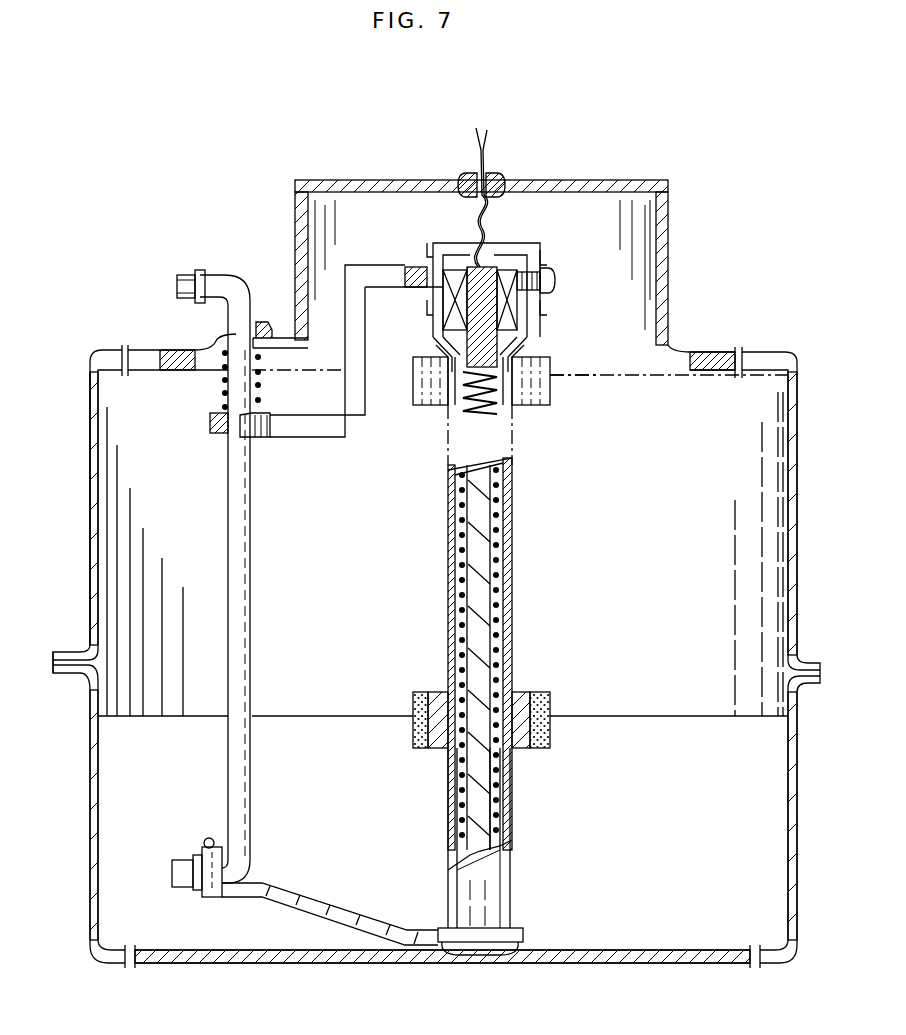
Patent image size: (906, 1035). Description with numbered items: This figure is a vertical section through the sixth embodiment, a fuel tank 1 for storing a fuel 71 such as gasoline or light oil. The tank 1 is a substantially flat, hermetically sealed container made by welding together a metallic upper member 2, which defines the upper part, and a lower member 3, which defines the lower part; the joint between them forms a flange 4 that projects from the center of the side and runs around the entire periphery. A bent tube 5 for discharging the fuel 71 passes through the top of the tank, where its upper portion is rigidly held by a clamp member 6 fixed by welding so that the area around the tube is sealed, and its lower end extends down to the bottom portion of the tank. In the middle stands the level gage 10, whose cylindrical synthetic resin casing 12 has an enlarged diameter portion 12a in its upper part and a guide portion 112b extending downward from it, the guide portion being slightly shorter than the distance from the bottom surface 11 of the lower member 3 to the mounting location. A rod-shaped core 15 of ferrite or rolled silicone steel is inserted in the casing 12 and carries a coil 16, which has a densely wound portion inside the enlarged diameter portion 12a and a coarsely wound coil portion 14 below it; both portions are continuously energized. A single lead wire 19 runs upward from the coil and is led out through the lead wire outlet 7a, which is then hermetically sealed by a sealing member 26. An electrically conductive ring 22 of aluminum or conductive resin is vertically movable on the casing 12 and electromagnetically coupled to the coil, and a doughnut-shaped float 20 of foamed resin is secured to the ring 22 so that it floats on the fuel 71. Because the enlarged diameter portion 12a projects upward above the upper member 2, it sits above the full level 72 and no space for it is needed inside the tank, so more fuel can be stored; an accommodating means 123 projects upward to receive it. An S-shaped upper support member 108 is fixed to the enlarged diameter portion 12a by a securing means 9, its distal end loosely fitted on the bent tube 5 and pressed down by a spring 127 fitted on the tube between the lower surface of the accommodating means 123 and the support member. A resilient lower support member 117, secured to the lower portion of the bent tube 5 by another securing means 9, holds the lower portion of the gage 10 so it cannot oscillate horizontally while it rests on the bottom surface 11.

The fuel tank 1 is at (86, 424).
The upper member 2 is at (91, 467).
The lower member 3 is at (88, 733).
The flange 4 is at (68, 652).
The bent tube 5 is at (230, 521).
The clamp member 6 is at (264, 326).
The lead wire outlet 7a is at (495, 172).
The securing means 9 is at (207, 840).
The level gage 10 is at (443, 565).
The bottom surface 11 is at (238, 952).
The casing 12 is at (450, 484).
The enlarged diameter portion 12a is at (433, 336).
The coarsely wound coil portion 14 is at (462, 537).
The core 15 is at (475, 590).
The coil 16 is at (462, 625).
The lead wire 19 is at (497, 212).
The float 20 is at (545, 398).
The electrically conductive ring 22 is at (522, 406).
The sealing member 26 is at (470, 172).
The fuel 71 is at (150, 716).
The full level 72 is at (608, 375).
The upper support member 108 is at (308, 440).
The guide portion 112b is at (449, 503).
The lower support member 117 is at (292, 905).
The accommodating means 123 is at (596, 186).
The spring 127 is at (262, 390).